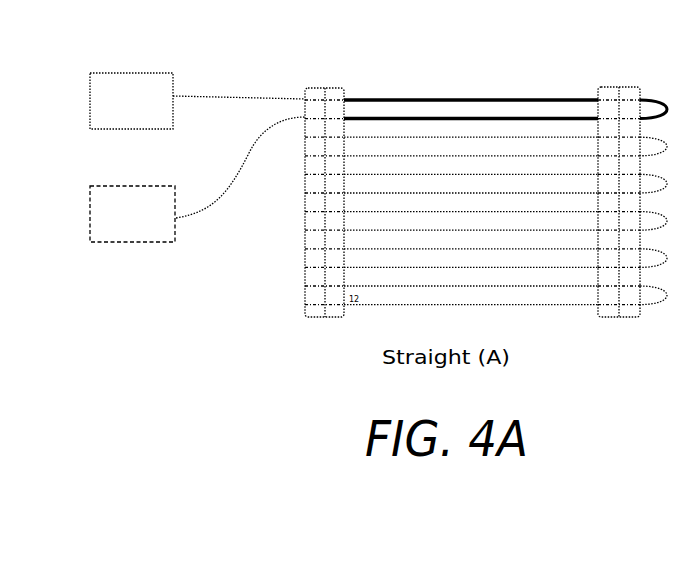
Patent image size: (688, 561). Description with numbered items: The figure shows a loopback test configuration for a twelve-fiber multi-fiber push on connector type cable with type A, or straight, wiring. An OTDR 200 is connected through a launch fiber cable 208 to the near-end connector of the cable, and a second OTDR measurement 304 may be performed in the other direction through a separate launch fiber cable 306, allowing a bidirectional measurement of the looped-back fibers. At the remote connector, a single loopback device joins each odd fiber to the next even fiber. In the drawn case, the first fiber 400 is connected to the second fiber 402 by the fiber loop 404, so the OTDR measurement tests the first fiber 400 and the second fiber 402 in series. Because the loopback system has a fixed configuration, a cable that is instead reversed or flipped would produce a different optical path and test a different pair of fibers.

The OTDR 200 is at (126, 68).
The launch fiber cable 208 is at (214, 90).
The OTDR measurement 304 is at (124, 175).
The launch fiber cable 306 is at (199, 220).
The fiber 1 400 is at (391, 91).
The fiber 2 402 is at (471, 108).
The fiber loop 404 is at (655, 94).